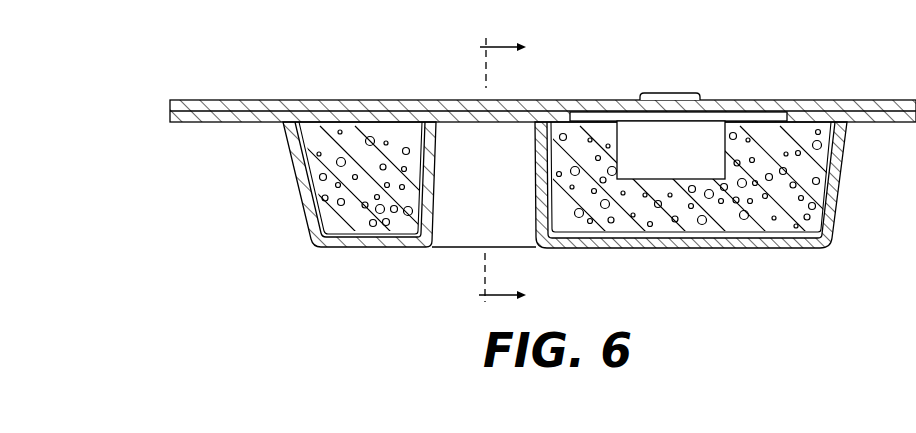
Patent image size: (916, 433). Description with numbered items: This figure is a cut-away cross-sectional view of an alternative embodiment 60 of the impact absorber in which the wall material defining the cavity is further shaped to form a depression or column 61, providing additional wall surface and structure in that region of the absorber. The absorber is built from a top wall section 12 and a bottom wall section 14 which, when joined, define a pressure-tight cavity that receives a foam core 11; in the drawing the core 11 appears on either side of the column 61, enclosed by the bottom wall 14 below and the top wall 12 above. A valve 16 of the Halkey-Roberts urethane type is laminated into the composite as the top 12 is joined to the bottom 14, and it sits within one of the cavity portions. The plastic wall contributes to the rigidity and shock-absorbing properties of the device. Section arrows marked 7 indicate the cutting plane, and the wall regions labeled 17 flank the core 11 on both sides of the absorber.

The embodiment of the impact absorber 60 is at (543, 160).
The section line 7- 7 is at (511, 172).
The column 61 is at (522, 137).
The valve 16 is at (705, 148).
The top wall section 12 is at (873, 106).
The housing wall 17 is at (297, 168).
The foam core 11 is at (352, 205).
The bottom wall section 14 is at (780, 240).